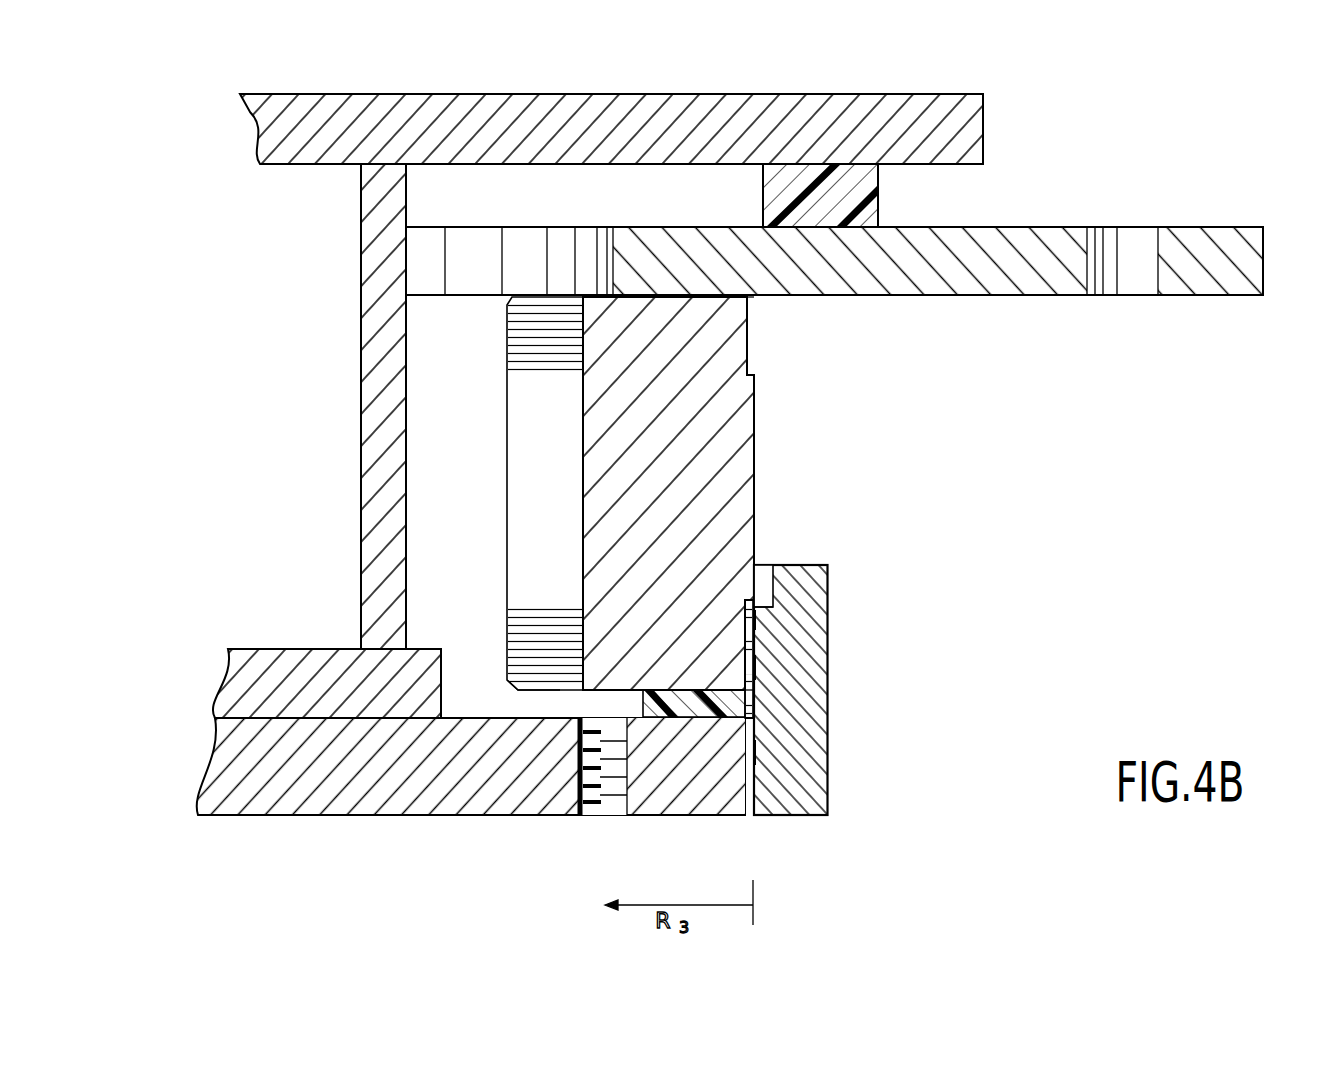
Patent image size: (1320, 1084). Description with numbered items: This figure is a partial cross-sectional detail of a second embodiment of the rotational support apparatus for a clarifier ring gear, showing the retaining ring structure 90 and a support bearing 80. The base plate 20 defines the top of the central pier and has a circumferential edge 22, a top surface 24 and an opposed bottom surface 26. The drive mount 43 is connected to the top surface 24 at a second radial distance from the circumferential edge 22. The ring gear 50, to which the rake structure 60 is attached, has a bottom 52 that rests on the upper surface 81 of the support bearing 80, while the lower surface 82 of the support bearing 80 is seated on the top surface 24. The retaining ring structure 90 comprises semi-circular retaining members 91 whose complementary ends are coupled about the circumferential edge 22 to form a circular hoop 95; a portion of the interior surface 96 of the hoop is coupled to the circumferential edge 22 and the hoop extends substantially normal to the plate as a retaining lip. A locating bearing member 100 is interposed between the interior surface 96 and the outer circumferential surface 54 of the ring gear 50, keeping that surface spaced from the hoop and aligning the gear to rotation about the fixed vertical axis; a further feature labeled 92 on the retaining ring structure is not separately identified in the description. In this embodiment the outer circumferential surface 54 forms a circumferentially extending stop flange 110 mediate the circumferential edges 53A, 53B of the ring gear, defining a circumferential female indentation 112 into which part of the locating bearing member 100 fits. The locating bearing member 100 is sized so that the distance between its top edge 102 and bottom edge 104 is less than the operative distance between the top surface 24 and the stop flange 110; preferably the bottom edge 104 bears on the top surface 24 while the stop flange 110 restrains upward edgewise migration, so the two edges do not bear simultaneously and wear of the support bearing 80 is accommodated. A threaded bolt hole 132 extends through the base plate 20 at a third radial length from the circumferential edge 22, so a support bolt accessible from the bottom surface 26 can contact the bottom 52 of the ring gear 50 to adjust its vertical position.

The base plate 20 is at (330, 785).
The circumferential edge 22 is at (758, 790).
The top surface 24 is at (487, 718).
The bottom surface 26 is at (442, 815).
The drive mount 43 is at (292, 648).
The ring gear 50 is at (530, 448).
The bottom 52 is at (570, 688).
The circumferential edge 53A is at (750, 300).
The circumferential edge 53B is at (750, 690).
The outer circumferential surface 54 is at (755, 447).
The rake structure 60 is at (1207, 297).
The support bearing 80 is at (672, 700).
The upper surface 81 is at (660, 668).
The lower surface 82 is at (693, 700).
The retaining ring structure 90 is at (828, 568).
The retaining member 91 is at (828, 813).
The inner surface 92 is at (755, 668).
The circular hoop 95 is at (801, 828).
The interior surface 96 is at (752, 750).
The locating bearing member 100 is at (755, 620).
The top edge 102 is at (757, 600).
The bottom edge 104 is at (752, 745).
The stop flange 110 is at (748, 612).
The circumferential female indentation 112 is at (745, 640).
The threaded bolt hole 132 is at (580, 818).